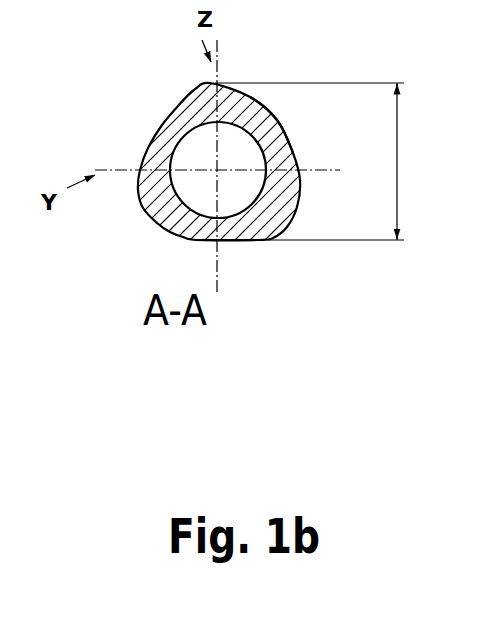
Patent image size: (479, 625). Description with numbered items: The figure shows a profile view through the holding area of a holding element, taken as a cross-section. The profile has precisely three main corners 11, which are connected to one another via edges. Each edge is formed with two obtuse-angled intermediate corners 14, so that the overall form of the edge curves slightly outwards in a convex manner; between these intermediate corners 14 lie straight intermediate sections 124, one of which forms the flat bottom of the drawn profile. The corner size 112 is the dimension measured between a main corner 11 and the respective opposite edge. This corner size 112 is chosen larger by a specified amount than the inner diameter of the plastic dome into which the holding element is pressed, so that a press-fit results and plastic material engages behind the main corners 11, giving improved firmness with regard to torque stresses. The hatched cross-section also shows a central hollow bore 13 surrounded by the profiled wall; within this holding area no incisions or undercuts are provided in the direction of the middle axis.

The main corner 11 is at (138, 217).
The inner bore 13 is at (261, 185).
The obtuse-angled intermediate corner 14 is at (274, 118).
The corner size 112 is at (339, 161).
The straight intermediate section 124 is at (184, 238).